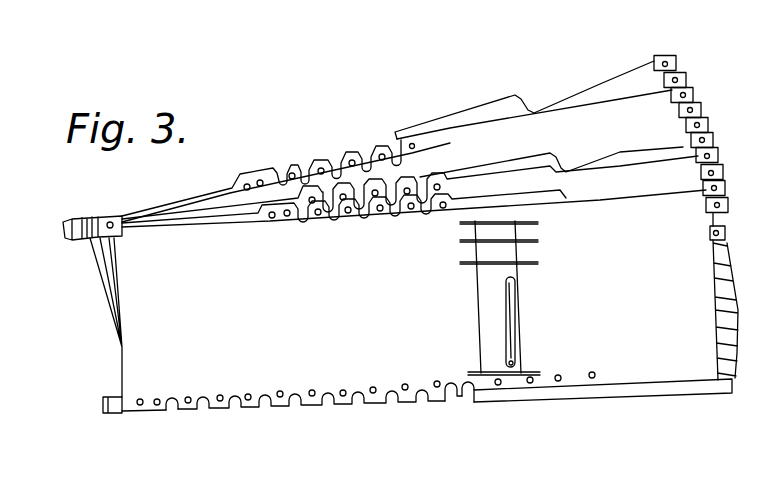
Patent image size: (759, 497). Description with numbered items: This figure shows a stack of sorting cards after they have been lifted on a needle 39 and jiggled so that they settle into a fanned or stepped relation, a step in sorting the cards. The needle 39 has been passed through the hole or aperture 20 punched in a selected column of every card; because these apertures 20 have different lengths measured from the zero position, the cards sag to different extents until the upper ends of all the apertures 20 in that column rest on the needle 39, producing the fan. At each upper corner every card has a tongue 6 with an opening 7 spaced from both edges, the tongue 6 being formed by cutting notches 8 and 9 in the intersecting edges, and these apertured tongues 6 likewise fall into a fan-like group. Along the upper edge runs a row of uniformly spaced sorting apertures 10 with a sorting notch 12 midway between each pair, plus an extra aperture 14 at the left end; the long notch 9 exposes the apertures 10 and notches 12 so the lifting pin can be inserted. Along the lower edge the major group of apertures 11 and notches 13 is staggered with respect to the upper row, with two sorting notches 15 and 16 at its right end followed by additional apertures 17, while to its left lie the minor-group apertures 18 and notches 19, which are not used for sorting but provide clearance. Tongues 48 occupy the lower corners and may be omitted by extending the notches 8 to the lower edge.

The tongue 6 is at (66, 224).
The opening or aperture 7 is at (110, 220).
The notch 8 is at (118, 352).
The notch 9 is at (216, 224).
The aperture 10 is at (381, 150).
The aperture 11 is at (405, 384).
The notch 12 is at (303, 168).
The notch 13 is at (360, 398).
The extra aperture 14 is at (247, 184).
The notch 15 is at (451, 401).
The notch 16 is at (466, 396).
The additional apertures 17 is at (557, 381).
The aperture 18 is at (188, 397).
The notch 19 is at (172, 410).
The hole or aperture 20 is at (512, 302).
The needle or pin 39 is at (513, 288).
The tongue 48 is at (104, 412).